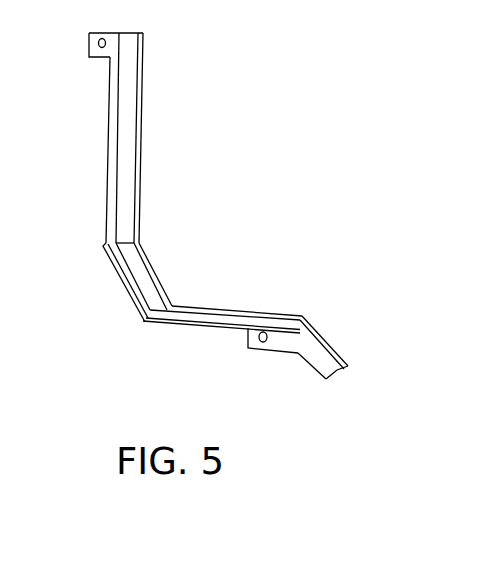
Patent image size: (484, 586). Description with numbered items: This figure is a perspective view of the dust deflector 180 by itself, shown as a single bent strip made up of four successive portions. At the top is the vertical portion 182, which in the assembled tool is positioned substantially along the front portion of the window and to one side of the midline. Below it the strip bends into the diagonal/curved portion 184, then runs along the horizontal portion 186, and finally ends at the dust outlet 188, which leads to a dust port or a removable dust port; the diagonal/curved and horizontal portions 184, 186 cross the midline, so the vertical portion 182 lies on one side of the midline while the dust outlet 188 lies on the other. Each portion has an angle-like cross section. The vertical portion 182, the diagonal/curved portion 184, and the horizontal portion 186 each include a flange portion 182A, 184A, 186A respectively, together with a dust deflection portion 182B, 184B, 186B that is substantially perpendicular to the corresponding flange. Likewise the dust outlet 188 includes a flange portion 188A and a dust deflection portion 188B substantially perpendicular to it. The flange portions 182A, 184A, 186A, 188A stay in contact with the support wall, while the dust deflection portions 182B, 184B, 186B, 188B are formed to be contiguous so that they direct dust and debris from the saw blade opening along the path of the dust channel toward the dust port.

The dust deflector 180 is at (330, 94).
The vertical portion 182 is at (99, 143).
The flange portion 182A is at (108, 100).
The dust deflection portion 182B is at (138, 90).
The diagonal/curved portion 184 is at (119, 295).
The flange portion 184A is at (110, 266).
The dust deflection portion 184B is at (150, 266).
The horizontal portion 186 is at (200, 329).
The flange portion 186A is at (170, 327).
The dust deflection portion 186B is at (227, 309).
The dust outlet 188 is at (321, 383).
The flange portion 188A is at (302, 357).
The dust deflection portion 188B is at (329, 341).